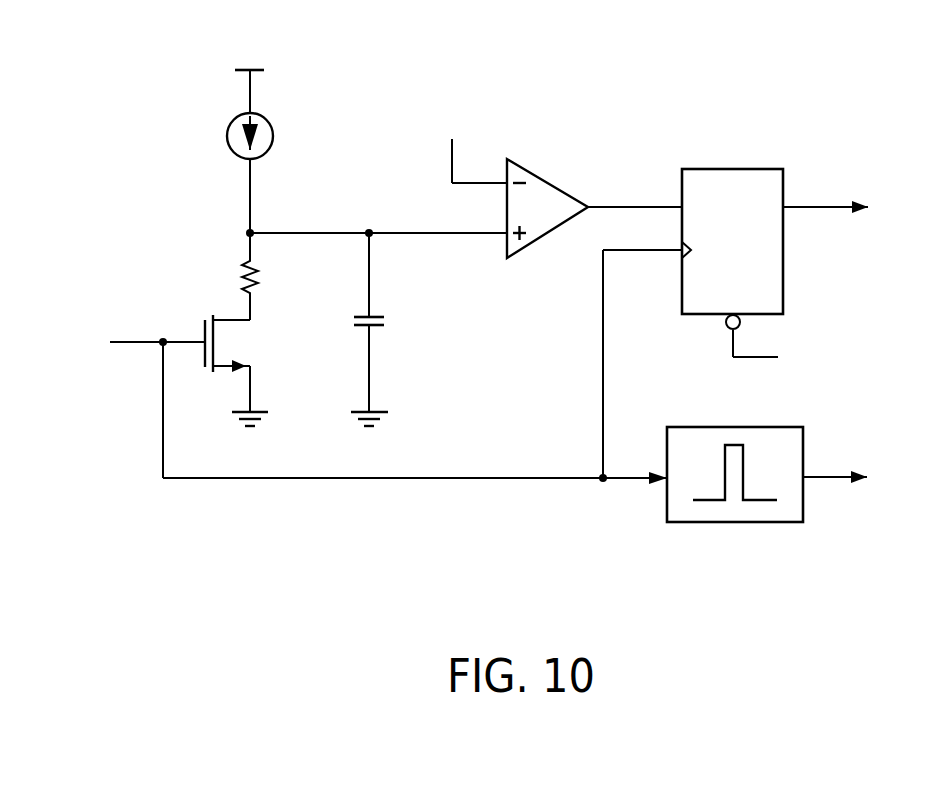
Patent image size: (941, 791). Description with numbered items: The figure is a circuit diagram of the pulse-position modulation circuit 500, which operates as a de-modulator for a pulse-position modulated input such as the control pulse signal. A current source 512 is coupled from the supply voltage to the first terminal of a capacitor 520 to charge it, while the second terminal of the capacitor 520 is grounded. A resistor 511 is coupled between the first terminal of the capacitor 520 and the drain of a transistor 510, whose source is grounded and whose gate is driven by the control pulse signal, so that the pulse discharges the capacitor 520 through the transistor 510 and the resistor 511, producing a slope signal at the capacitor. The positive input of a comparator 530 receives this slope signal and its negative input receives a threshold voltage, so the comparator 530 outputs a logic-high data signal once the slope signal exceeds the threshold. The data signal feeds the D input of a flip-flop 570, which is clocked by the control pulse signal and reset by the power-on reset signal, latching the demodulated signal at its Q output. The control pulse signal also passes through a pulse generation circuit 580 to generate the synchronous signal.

The pulse-position modulation circuit 500 is at (876, 67).
The transistor 510 is at (249, 343).
The resistor 511 is at (276, 277).
The current source 512 is at (224, 136).
The capacitor 520 is at (394, 320).
The comparator 530 is at (550, 205).
The flip-flop 570 is at (732, 236).
The pulse generation circuit 580 is at (735, 459).